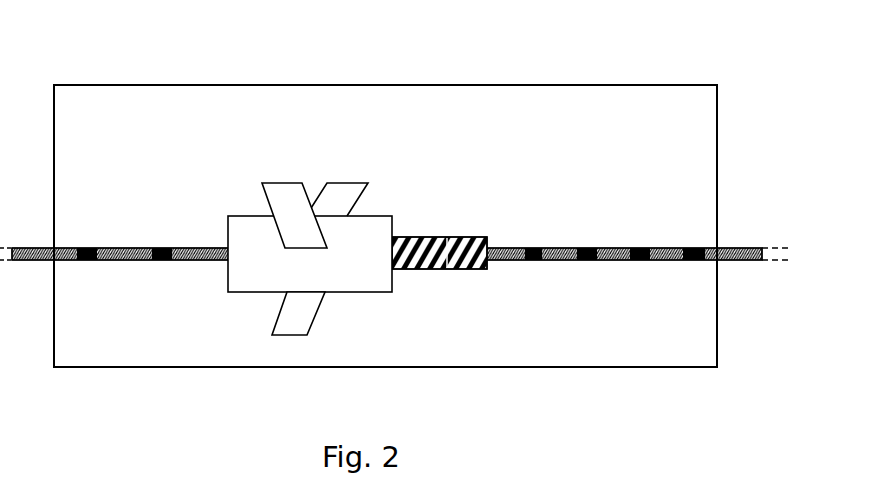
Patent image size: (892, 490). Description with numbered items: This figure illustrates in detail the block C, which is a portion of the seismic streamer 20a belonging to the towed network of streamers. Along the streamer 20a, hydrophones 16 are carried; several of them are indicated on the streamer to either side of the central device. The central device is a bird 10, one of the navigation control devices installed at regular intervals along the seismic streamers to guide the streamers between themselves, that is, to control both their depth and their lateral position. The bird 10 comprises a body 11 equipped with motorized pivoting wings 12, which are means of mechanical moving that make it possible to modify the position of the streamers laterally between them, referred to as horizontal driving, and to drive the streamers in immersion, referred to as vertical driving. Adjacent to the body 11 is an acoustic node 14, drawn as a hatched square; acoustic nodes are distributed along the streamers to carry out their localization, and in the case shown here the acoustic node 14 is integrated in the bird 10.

The block C is at (565, 85).
The bird 10 is at (317, 172).
The body 11 is at (238, 281).
The motorized pivoting wings 12 is at (280, 190).
The acoustic node 14 is at (447, 269).
The hydrophone 16 is at (640, 248).
The seismic streamer 20a is at (727, 248).